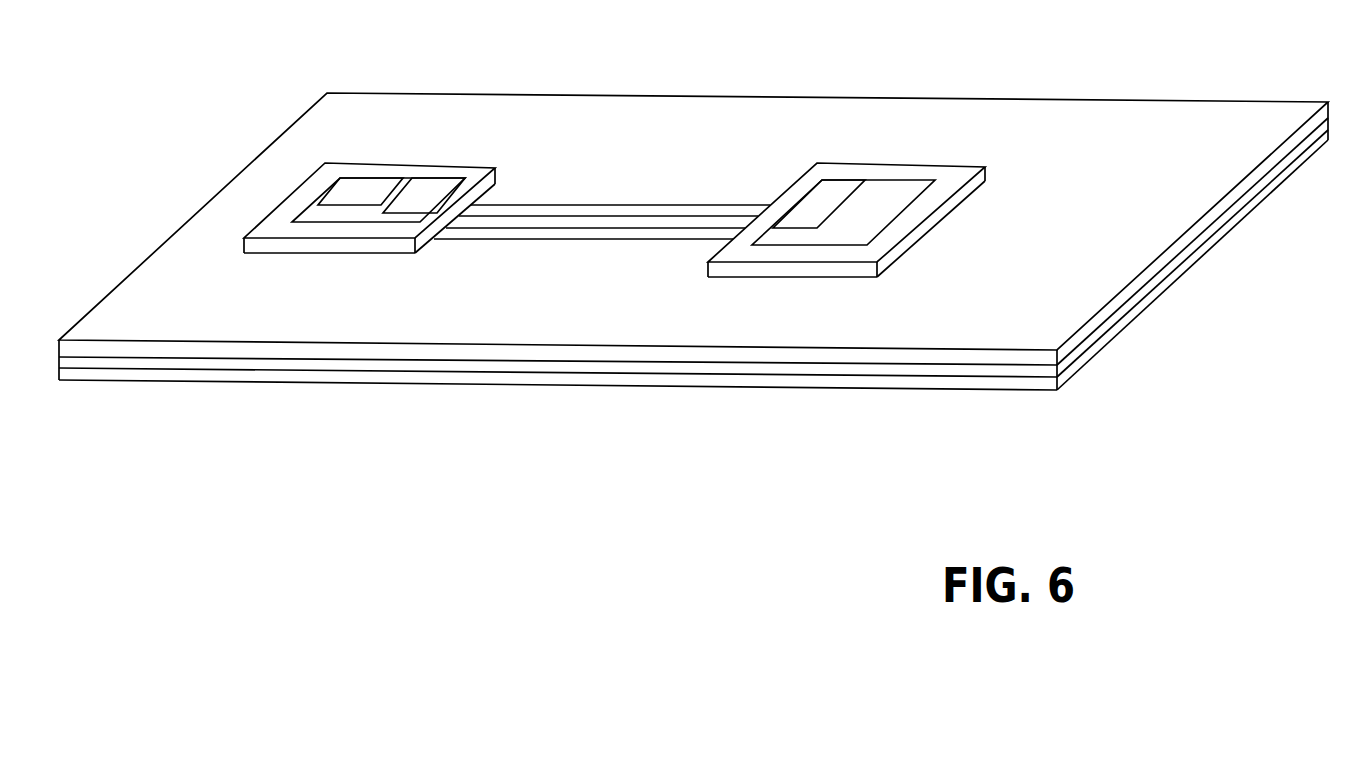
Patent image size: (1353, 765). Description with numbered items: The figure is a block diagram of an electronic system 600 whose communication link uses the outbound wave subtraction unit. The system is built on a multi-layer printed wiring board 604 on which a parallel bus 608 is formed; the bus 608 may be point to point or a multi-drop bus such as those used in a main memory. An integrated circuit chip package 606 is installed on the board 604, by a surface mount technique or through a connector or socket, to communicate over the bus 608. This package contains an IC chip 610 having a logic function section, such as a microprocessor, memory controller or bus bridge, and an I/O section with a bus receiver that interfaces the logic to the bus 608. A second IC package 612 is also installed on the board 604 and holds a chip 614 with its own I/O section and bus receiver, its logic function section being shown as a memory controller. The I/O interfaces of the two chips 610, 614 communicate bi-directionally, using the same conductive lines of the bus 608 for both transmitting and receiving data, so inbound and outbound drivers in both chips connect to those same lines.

The electronic system 600 is at (693, 241).
The multi-layer printed wiring board 604 is at (899, 90).
The integrated circuit chip package 606 is at (345, 180).
The parallel bus 608 is at (612, 201).
The IC chip 610 is at (308, 205).
The second IC package 612 is at (853, 193).
The chip 614 is at (843, 180).